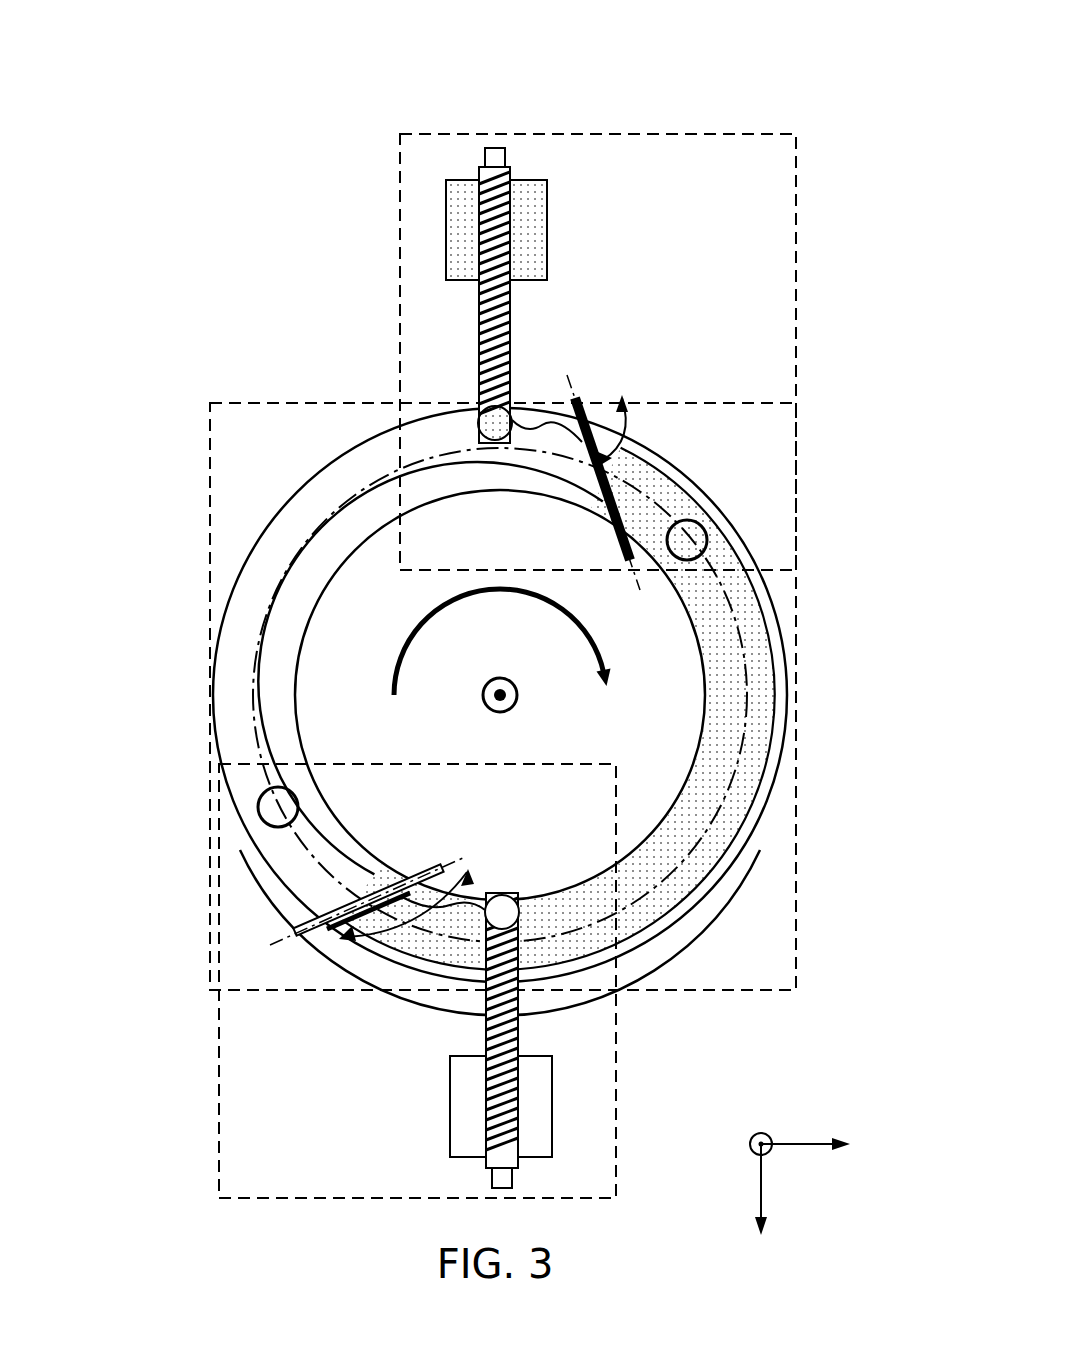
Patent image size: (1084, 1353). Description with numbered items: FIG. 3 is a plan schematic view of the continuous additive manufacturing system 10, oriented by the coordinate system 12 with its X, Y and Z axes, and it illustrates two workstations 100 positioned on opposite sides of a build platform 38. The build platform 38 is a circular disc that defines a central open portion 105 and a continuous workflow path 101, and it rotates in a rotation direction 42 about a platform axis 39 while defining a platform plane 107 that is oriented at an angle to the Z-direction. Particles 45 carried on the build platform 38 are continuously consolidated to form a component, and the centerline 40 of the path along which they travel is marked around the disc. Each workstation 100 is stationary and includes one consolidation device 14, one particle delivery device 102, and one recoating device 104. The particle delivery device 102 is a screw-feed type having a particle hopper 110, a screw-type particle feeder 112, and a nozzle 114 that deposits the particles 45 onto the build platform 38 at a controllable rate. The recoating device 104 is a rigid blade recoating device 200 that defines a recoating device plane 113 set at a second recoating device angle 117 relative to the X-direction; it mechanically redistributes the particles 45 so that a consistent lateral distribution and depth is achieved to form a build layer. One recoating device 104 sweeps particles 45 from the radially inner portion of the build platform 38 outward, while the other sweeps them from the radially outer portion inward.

The continuous additive manufacturing system 10 is at (712, 70).
The coordinate system 12 is at (805, 1100).
The consolidation device 14 is at (707, 544).
The build platform 38 is at (437, 973).
The platform axis 39 is at (506, 695).
The rotor center line 40 is at (239, 689).
The rotation direction 42 is at (421, 628).
The particles 45 is at (232, 625).
The workstation 100 is at (797, 189).
The continuous workflow path 101 is at (772, 682).
The particle delivery device 102 is at (543, 217).
The recoating device 104 is at (570, 475).
The central open portion 105 is at (600, 700).
The platform plane 107 is at (210, 465).
The particle hopper 110 is at (455, 216).
The particle feeder 112 is at (510, 335).
The recoating device plane 113 is at (577, 379).
The nozzle 114 is at (495, 429).
The second recoating device angle 117 is at (628, 432).
The rigid blade recoating device 200 is at (608, 528).